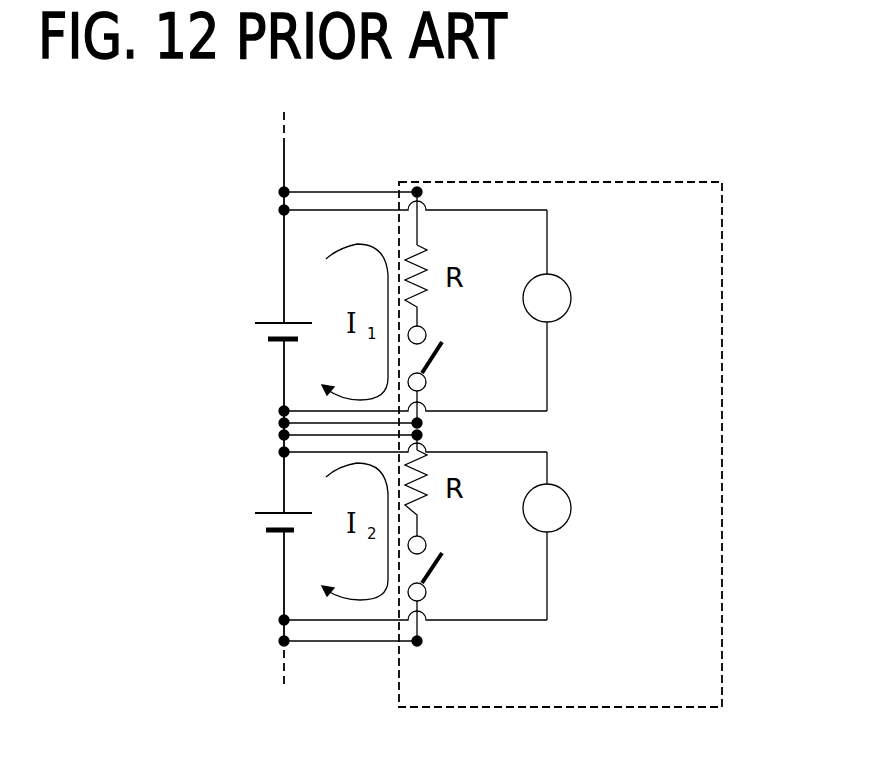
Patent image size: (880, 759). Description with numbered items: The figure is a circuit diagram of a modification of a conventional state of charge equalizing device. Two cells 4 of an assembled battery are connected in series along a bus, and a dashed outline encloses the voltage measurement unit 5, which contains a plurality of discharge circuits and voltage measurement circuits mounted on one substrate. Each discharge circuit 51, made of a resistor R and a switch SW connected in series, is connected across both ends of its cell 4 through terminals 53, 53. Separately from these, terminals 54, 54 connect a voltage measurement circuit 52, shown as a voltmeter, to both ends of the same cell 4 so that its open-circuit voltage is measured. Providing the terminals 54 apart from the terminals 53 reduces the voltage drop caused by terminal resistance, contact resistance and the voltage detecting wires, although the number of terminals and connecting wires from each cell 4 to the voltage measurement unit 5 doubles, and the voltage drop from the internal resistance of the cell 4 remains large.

The cell 4 is at (263, 318).
The voltage measurement unit 5 is at (491, 181).
The discharge circuit 51 is at (445, 320).
The voltage measurement circuit 52 is at (553, 277).
The terminals 53 is at (280, 192).
The terminals 54 is at (280, 210).